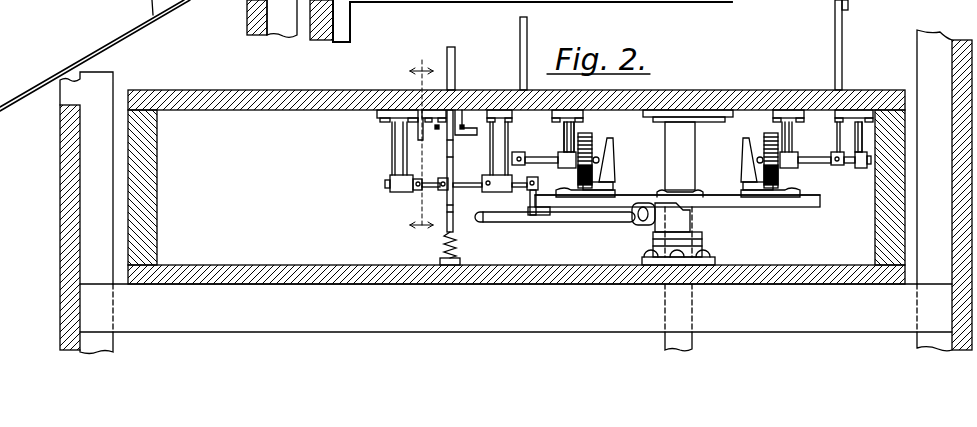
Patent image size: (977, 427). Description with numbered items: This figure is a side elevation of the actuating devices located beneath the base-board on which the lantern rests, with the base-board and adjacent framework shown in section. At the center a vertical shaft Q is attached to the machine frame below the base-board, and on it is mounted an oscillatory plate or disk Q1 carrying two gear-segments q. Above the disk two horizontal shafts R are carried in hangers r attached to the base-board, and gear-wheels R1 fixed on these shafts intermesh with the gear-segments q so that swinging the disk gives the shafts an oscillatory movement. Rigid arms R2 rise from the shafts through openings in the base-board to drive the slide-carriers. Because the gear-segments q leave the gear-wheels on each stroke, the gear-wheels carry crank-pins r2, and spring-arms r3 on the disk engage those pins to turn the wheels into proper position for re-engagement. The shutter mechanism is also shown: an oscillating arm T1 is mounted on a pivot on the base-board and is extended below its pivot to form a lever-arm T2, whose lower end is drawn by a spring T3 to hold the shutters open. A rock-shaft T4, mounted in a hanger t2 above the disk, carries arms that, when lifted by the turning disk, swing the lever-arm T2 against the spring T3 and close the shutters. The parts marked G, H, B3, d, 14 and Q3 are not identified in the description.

The inclined guide rail G is at (3, 98).
The support standard H is at (506, 10).
The frame upright B3 is at (926, 8).
The cross bar d is at (706, 4).
The rigid arm R2 is at (528, 50).
The oscillating arm T1 is at (455, 72).
The travel distance 14 is at (422, 151).
The hanger t2 is at (498, 150).
The rock-shaft T4 is at (534, 206).
The spring T3 is at (455, 243).
The horizontal shaft R is at (692, 139).
The hanger r is at (573, 124).
The gear-wheel R1 is at (799, 179).
The spring-arm r3 is at (614, 146).
The lever-arm T2 is at (777, 138).
The crank-pin r2 is at (610, 176).
The vertical shaft Q is at (683, 153).
The oscillatory plate or disk Q1 is at (808, 204).
The gear-segment q is at (586, 201).
The cylinder and pedestal Q3 is at (639, 211).